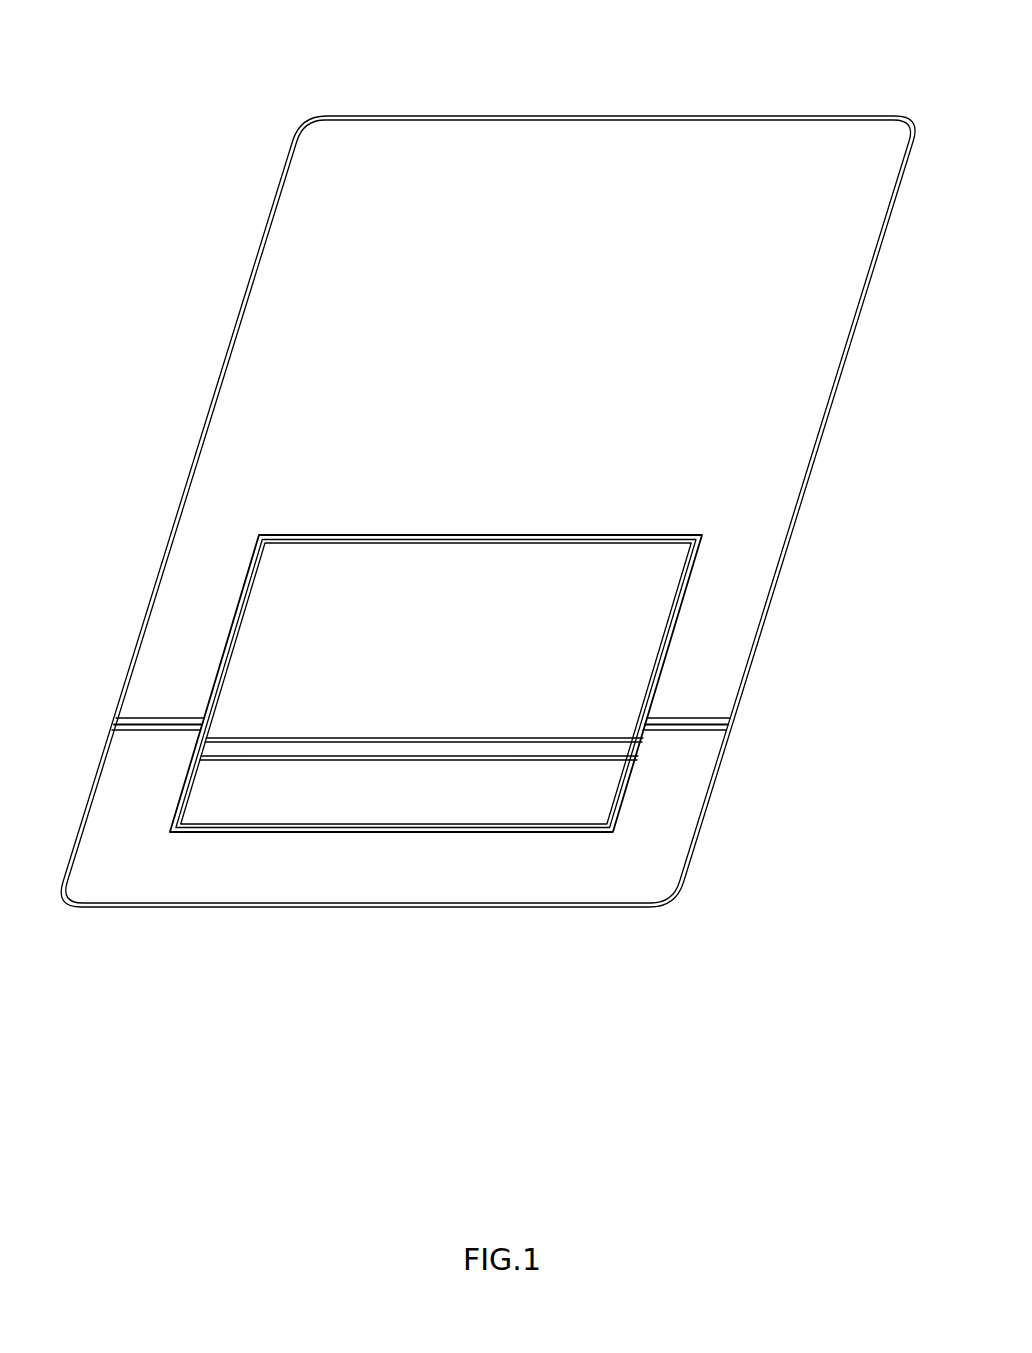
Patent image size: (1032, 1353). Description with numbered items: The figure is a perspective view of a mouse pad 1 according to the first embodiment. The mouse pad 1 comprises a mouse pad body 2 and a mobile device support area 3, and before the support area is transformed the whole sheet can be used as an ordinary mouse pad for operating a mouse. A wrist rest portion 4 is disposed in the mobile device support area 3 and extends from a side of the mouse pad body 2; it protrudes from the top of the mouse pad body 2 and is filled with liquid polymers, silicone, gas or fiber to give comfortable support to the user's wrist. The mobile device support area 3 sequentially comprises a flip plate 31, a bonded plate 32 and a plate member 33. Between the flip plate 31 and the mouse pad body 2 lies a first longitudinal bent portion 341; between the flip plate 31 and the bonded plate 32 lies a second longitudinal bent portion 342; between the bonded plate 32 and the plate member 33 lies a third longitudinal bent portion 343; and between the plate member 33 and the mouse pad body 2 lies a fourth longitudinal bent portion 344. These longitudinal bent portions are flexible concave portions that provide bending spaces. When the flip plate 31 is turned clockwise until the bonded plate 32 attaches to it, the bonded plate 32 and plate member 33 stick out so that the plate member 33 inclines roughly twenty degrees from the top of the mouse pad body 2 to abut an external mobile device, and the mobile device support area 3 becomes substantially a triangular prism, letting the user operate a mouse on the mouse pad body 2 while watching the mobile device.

The mouse pad 1 is at (598, 42).
The mouse pad body 2 is at (300, 182).
The mobile device support area 3 is at (827, 797).
The flip plate 31 is at (615, 870).
The bonded plate 32 is at (590, 785).
The plate member 33 is at (613, 698).
The first longitudinal bent portion 341 is at (652, 767).
The second longitudinal bent portion 342 is at (504, 866).
The third longitudinal bent portion 343 is at (261, 734).
The fourth longitudinal bent portion 344 is at (669, 531).
The wrist rest portion 4 is at (262, 608).